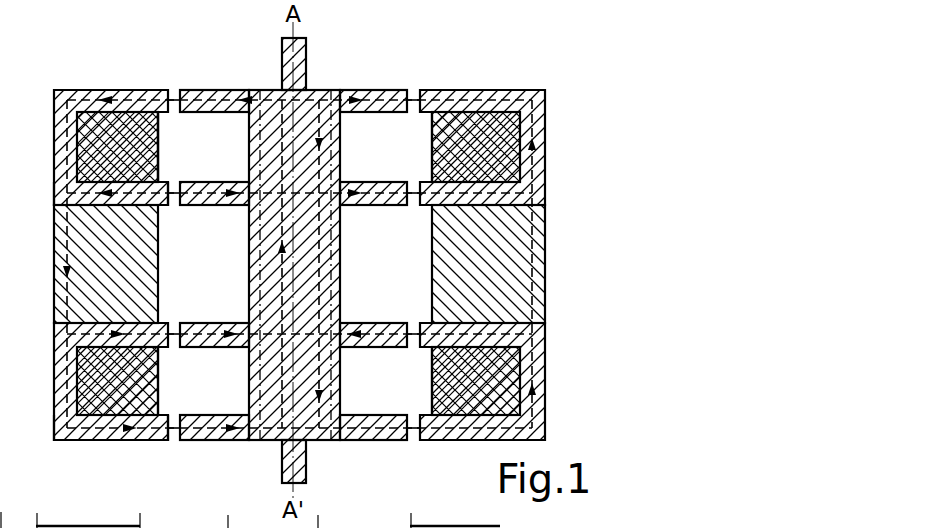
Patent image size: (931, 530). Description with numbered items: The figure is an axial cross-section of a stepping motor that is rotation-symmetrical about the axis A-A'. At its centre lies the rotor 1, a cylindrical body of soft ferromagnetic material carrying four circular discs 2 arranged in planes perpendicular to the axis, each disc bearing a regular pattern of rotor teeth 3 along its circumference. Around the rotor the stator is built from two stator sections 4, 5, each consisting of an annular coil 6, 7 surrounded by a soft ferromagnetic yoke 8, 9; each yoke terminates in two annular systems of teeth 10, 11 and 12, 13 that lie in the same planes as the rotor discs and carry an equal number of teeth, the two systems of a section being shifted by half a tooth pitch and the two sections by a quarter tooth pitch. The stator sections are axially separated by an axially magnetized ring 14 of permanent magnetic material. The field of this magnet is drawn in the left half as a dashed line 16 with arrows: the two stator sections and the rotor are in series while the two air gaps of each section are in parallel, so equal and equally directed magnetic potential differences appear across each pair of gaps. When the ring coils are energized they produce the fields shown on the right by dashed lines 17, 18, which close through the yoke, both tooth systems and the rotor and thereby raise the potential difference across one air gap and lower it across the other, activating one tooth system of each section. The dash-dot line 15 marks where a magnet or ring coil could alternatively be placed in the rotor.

The rotor 1 is at (303, 97).
The circular discs 2 is at (232, 92).
The rotor teeth 3 is at (190, 92).
The stator section 4 is at (482, 123).
The stator section 5 is at (462, 405).
The annular coil 6 is at (93, 153).
The annular coil 7 is at (93, 383).
The yoke 8 is at (58, 193).
The yoke 9 is at (63, 427).
The system of teeth 10 is at (166, 92).
The system of teeth 11 is at (161, 202).
The system of teeth 12 is at (162, 322).
The system of teeth 13 is at (160, 440).
The ring of permanent magnetic material 14 is at (528, 268).
The dash-dot line 15 is at (333, 246).
The dashed line 16 is at (63, 257).
The dashed line 17 is at (534, 147).
The dashed line 18 is at (534, 392).